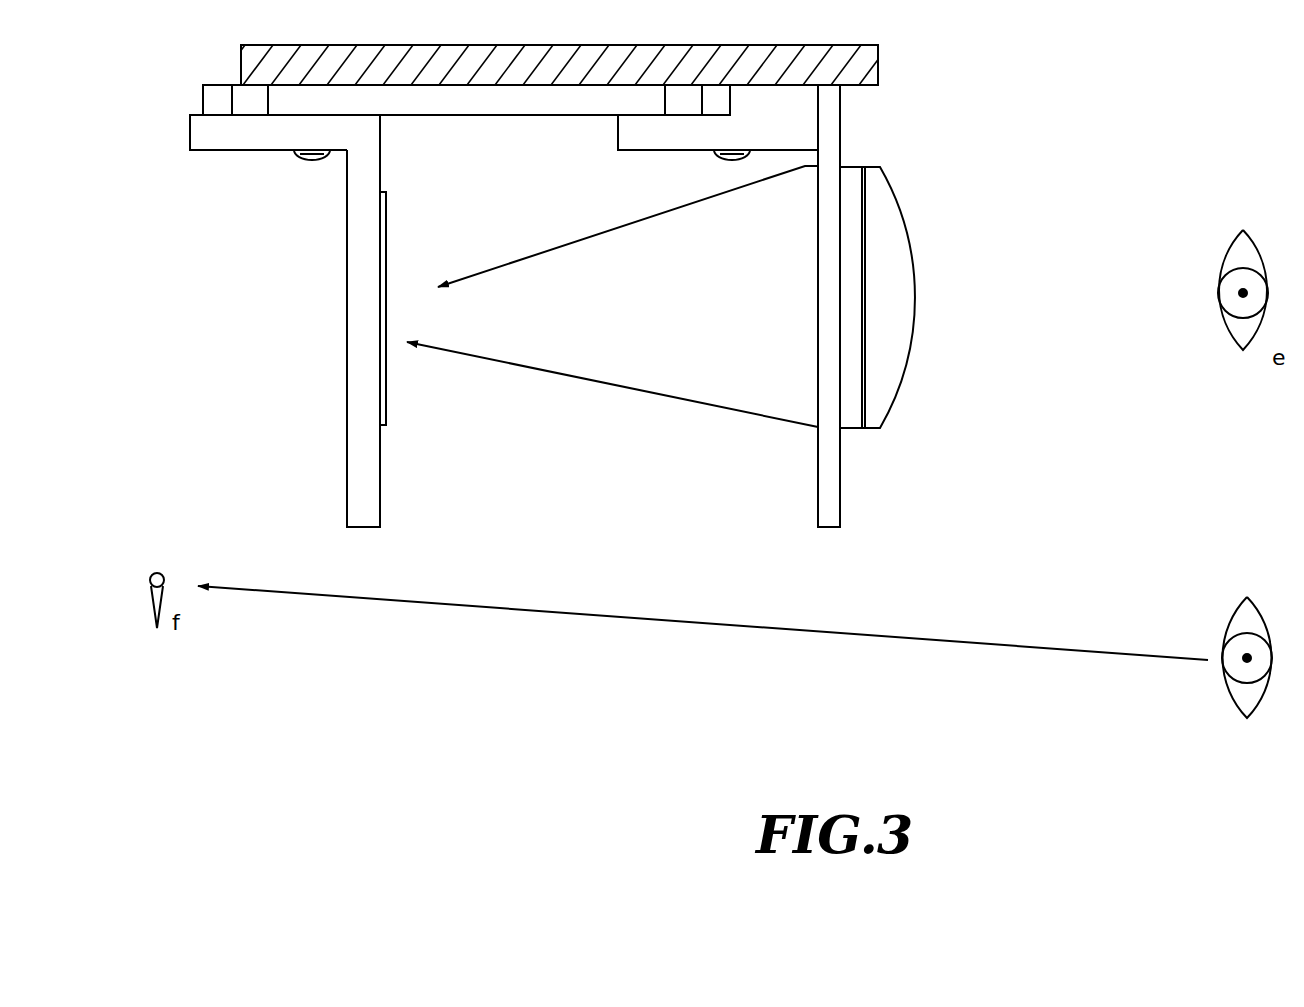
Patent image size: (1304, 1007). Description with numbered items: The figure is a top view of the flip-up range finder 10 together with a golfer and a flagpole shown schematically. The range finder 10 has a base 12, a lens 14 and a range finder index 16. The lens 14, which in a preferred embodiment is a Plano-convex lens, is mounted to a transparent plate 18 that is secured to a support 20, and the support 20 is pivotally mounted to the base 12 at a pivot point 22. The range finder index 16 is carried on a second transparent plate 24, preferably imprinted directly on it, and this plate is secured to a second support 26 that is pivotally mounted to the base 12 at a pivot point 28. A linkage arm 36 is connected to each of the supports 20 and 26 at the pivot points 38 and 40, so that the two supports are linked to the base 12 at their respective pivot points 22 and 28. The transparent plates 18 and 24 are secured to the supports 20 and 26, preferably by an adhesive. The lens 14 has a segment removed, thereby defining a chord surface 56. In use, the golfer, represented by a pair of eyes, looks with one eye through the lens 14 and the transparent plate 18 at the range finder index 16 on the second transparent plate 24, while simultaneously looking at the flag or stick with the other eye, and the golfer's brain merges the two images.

The flip-up range finder 10 is at (898, 50).
The base 12 is at (573, 45).
The lens 14 is at (900, 250).
The range finder index 16 is at (387, 218).
The transparent plate 18 is at (832, 510).
The support 20 is at (770, 95).
The pivot point 22 is at (730, 155).
The second transparent plate 24 is at (368, 510).
The second support 26 is at (218, 145).
The pivot point 28 is at (318, 160).
The linkage arm 36 is at (462, 107).
The pivot point 38 is at (680, 88).
The pivot point 40 is at (240, 92).
The chord surface 56 is at (875, 428).